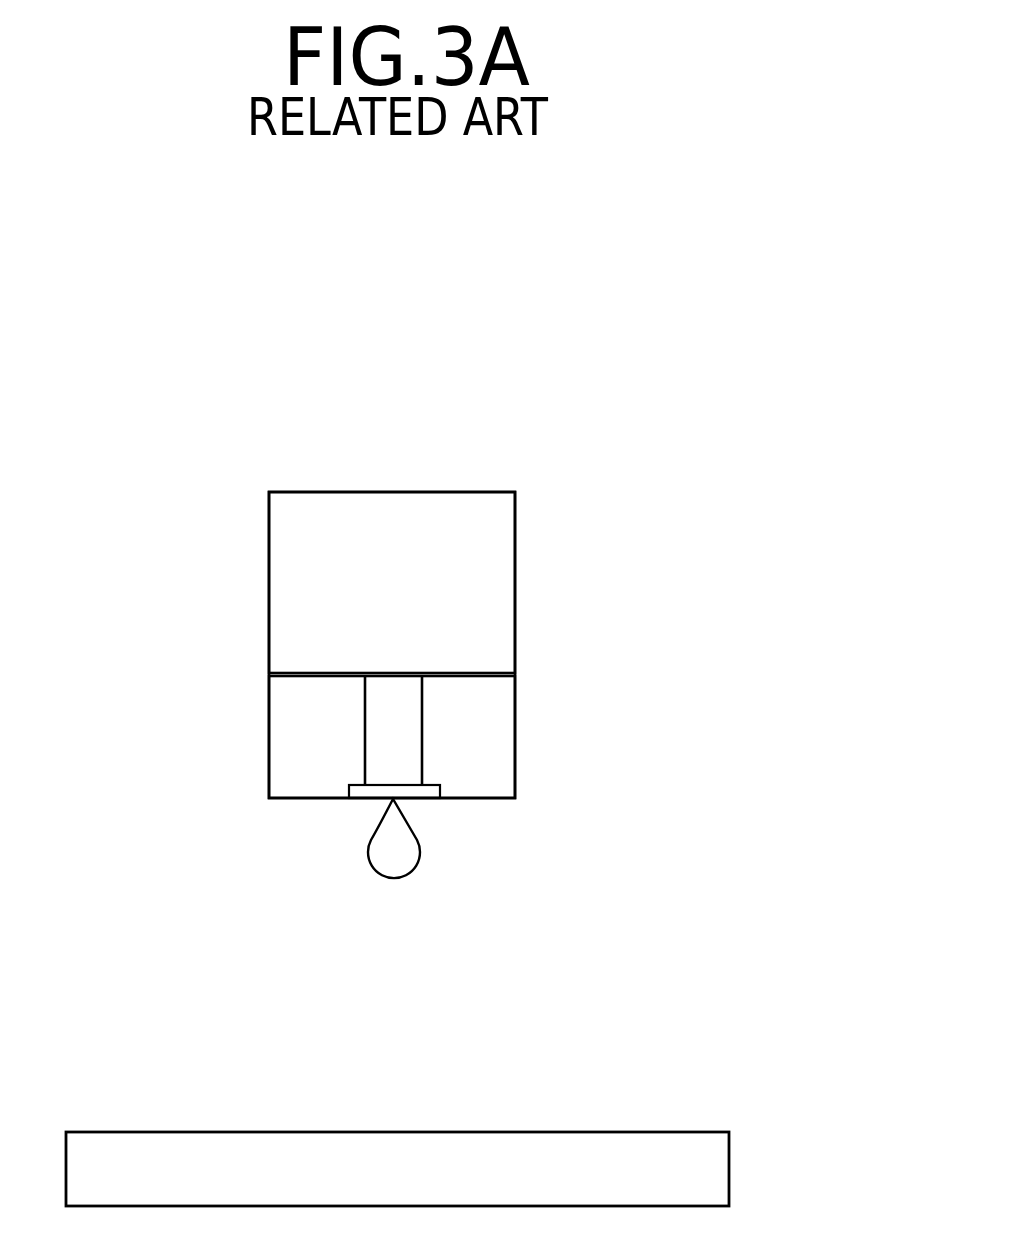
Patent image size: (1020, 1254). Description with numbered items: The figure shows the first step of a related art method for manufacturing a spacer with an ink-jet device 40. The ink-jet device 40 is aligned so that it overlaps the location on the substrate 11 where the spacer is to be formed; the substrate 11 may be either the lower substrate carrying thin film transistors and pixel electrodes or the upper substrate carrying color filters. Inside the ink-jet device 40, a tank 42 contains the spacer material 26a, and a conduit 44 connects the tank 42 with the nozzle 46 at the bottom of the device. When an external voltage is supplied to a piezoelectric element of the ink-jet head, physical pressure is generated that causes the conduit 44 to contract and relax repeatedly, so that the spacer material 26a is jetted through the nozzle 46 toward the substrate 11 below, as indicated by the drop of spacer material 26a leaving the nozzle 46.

The ink-jet device 40 is at (240, 606).
The tank 42 is at (502, 583).
The conduit 44 is at (502, 735).
The nozzle 46 is at (375, 765).
The spacer material 26a is at (410, 845).
The substrate 11 is at (718, 1168).